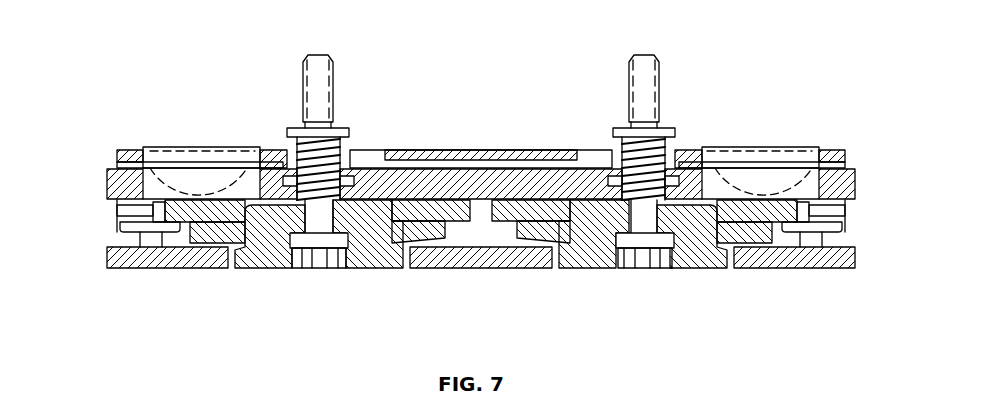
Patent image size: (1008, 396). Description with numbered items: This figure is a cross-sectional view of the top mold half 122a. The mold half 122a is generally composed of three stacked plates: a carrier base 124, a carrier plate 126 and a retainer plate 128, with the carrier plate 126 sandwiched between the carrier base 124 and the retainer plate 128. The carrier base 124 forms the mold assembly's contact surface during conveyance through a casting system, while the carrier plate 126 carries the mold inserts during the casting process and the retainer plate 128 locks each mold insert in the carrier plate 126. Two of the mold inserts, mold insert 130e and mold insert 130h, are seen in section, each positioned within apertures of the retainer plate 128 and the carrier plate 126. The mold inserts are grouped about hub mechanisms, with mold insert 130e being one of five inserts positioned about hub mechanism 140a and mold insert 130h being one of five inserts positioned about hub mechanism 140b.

The mold half 122a is at (212, 57).
The carrier base 124 is at (117, 268).
The carrier plate 126 is at (107, 180).
The retainer plate 128 is at (115, 157).
The mold insert 130e is at (152, 150).
The mold insert 130h is at (815, 146).
The hub mechanism 140a is at (266, 268).
The hub mechanism 140b is at (705, 268).